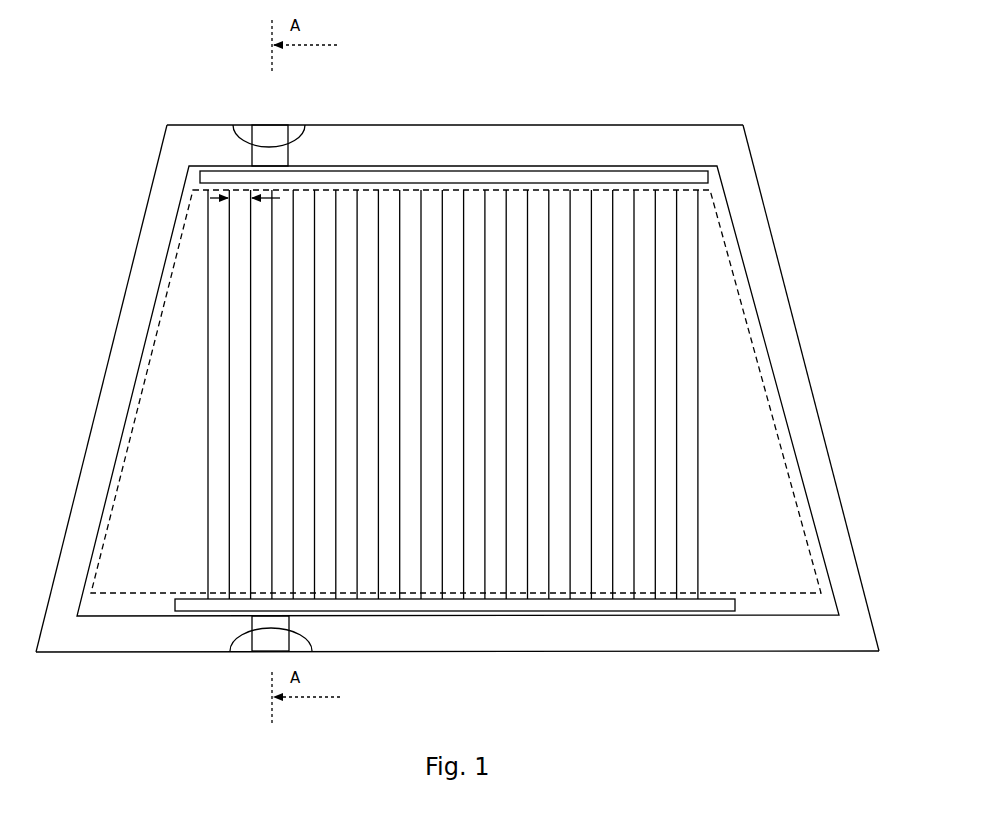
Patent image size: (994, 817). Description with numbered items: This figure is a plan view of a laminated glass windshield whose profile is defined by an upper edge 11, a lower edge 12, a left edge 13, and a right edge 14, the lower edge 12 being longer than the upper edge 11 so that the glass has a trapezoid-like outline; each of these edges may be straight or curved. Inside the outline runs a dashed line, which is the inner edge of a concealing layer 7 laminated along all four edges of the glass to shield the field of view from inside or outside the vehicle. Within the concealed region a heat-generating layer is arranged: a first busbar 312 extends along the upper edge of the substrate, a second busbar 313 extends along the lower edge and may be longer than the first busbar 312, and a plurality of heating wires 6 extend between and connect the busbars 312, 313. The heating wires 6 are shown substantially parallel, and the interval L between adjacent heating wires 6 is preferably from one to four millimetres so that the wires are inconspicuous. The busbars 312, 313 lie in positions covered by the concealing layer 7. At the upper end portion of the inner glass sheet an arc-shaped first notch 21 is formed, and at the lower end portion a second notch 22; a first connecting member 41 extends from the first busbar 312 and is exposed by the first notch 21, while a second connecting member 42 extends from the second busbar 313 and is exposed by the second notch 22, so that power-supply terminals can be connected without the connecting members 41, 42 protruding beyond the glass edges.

The upper edge 11 is at (545, 125).
The lower edge 12 is at (700, 651).
The left edge 13 is at (118, 325).
The right edge 14 is at (815, 403).
The concealing layer 7 is at (802, 519).
The heating wires 6 is at (229, 452).
The first busbar 312 is at (455, 171).
The second busbar 313 is at (540, 611).
The first notch 21 is at (247, 128).
The second notch 22 is at (237, 648).
The first connecting member 41 is at (272, 131).
The second connecting member 42 is at (282, 640).
The interval between adjacent heating wires L is at (232, 203).